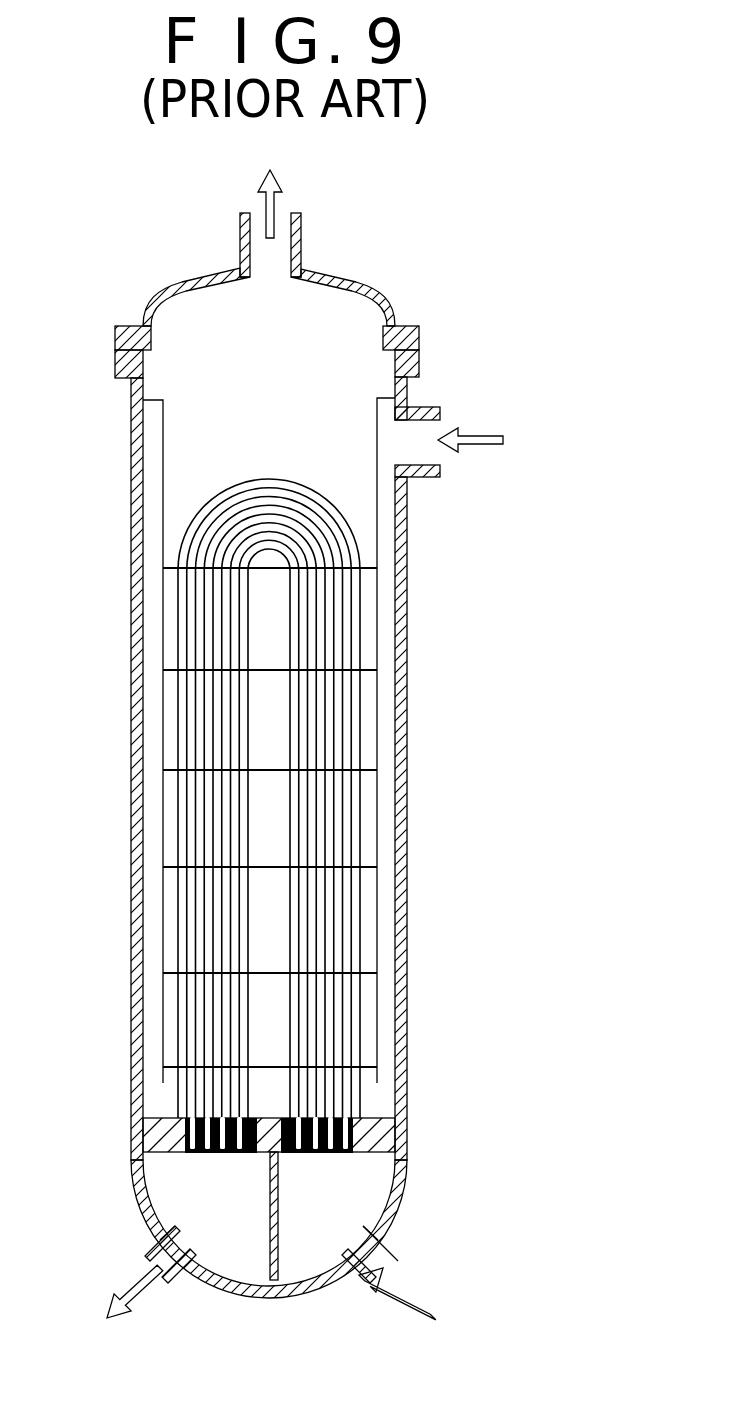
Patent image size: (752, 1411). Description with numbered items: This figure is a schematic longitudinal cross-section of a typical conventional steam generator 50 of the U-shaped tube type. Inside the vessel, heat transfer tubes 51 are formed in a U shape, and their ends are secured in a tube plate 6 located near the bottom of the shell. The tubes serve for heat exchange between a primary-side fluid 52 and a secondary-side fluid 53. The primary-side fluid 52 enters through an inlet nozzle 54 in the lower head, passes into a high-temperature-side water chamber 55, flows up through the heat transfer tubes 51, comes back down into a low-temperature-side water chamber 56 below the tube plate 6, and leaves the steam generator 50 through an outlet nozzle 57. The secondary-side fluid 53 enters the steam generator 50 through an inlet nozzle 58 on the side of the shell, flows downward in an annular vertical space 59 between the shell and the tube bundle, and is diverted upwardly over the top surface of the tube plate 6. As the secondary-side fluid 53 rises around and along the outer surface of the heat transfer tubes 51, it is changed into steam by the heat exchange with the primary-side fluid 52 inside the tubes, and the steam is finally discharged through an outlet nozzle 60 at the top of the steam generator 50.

The tube plate 6 is at (375, 1135).
The steam generator 50 is at (407, 616).
The heat transfer tubes 51 is at (358, 897).
The primary-side fluid 52 is at (274, 1313).
The secondary-side fluid 53 is at (409, 310).
The inlet nozzle 54 is at (388, 1240).
The high-temperature-side water chamber 55 is at (372, 1180).
The low-temperature-side water chamber 56 is at (252, 1255).
The outlet nozzle 57 is at (185, 1267).
The inlet nozzle 58 is at (440, 407).
The annular vertical space 59 is at (385, 732).
The outlet nozzle 60 is at (301, 230).